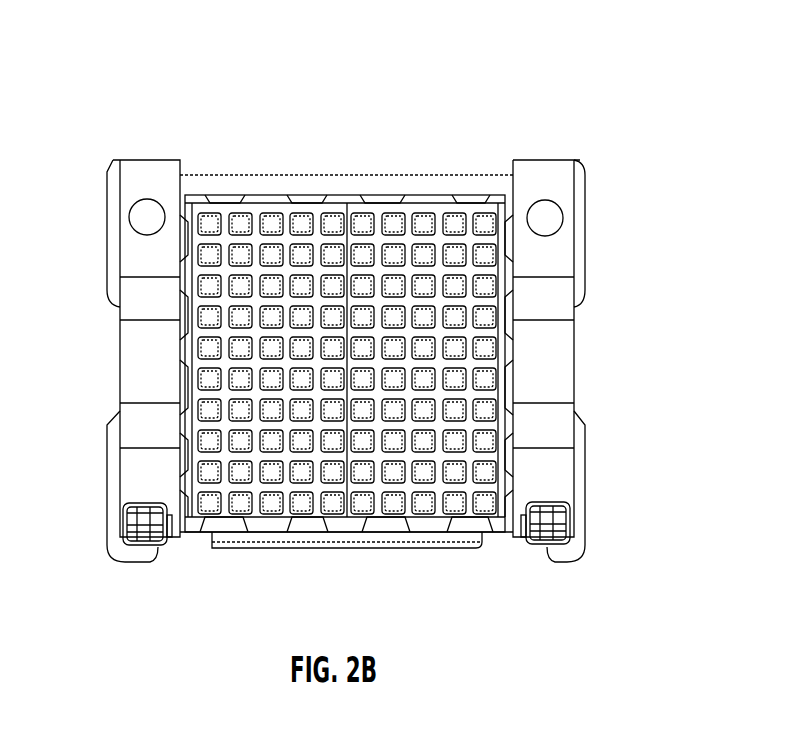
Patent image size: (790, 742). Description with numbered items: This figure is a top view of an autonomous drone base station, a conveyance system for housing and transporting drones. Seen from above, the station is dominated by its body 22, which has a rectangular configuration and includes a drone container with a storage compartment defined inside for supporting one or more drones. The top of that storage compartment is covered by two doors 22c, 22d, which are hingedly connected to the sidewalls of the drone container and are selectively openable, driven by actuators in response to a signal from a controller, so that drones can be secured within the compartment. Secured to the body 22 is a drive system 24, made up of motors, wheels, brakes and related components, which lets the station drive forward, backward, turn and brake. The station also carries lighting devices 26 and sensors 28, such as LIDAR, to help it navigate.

The body 22 is at (441, 292).
The door 22c is at (438, 247).
The door 22d is at (252, 238).
The drive system 24 is at (107, 513).
The lighting device 26 is at (165, 547).
The sensor 28 is at (150, 213).